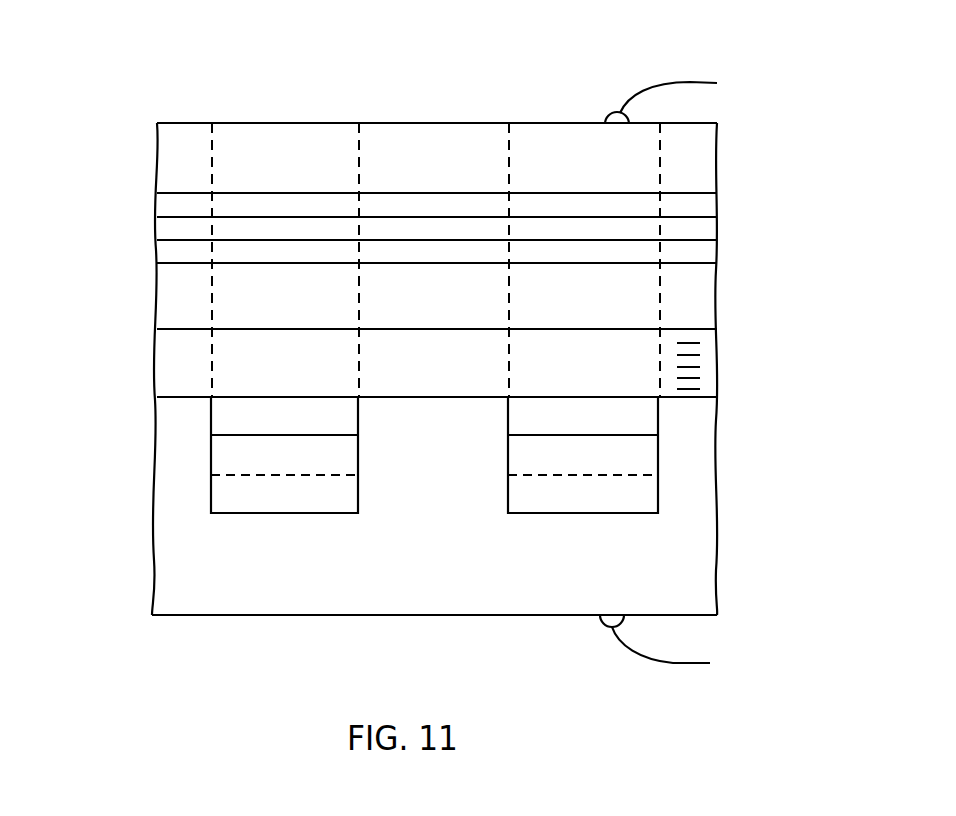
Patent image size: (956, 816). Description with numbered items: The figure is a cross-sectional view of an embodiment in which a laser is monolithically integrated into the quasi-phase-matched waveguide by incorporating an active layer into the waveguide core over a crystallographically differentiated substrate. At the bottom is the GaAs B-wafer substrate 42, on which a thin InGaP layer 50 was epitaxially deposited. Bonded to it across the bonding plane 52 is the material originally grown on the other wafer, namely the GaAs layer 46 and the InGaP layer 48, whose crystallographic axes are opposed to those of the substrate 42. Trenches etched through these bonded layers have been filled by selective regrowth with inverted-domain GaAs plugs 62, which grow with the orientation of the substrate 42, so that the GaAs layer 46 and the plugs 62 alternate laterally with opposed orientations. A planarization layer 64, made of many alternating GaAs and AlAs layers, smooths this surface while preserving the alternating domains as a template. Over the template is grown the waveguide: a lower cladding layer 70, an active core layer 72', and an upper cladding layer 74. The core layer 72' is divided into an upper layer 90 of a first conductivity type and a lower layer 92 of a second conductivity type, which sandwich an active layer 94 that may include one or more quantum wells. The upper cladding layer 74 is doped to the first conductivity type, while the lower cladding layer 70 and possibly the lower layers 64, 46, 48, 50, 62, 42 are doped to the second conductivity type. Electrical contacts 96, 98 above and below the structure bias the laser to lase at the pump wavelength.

The B-wafer substrate 42 is at (165, 582).
The GaAs layer 46 is at (218, 415).
The InGaP layer 48 is at (218, 453).
The second InGaP layer 50 is at (218, 493).
The bonding plane 52 is at (636, 474).
The inverted-domain GaAs plug 62 is at (160, 502).
The planarization layer 64 is at (165, 362).
The lower cladding layer 70 is at (170, 298).
The active core layer 72' is at (32, 228).
The upper cladding layer 74 is at (170, 157).
The upper layer 90 is at (170, 208).
The lower layer 92 is at (170, 254).
The active layer 94 is at (170, 230).
The electrical contact 96 is at (608, 116).
The electrical contact 98 is at (603, 630).